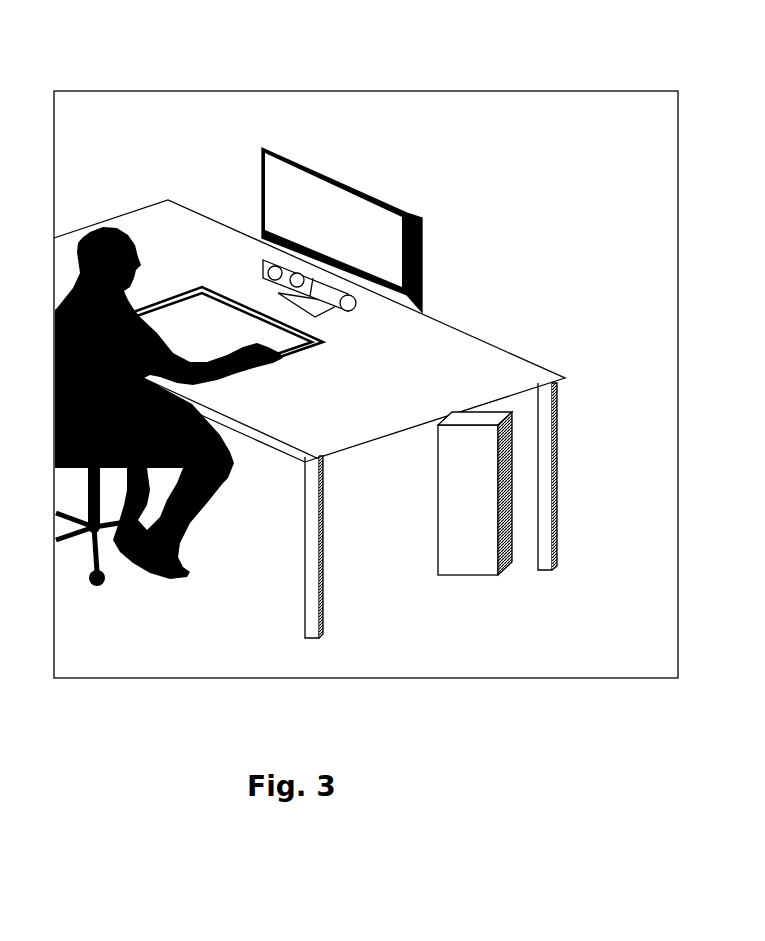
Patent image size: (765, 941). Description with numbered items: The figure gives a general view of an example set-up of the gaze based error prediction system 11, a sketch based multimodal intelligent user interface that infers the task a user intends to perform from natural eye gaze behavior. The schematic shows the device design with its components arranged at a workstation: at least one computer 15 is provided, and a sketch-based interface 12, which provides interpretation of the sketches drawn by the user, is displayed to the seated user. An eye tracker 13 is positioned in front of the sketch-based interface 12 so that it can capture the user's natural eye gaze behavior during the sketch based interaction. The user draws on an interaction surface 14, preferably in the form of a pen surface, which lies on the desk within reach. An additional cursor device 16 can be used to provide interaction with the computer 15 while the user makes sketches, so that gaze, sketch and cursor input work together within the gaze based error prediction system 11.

The gaze based error prediction system 11 is at (217, 117).
The sketch-based interface 12 is at (333, 180).
The eye tracker 13 is at (423, 302).
The interaction surface 14 is at (275, 318).
The computer 15 is at (513, 487).
The cursor device 16 is at (268, 383).